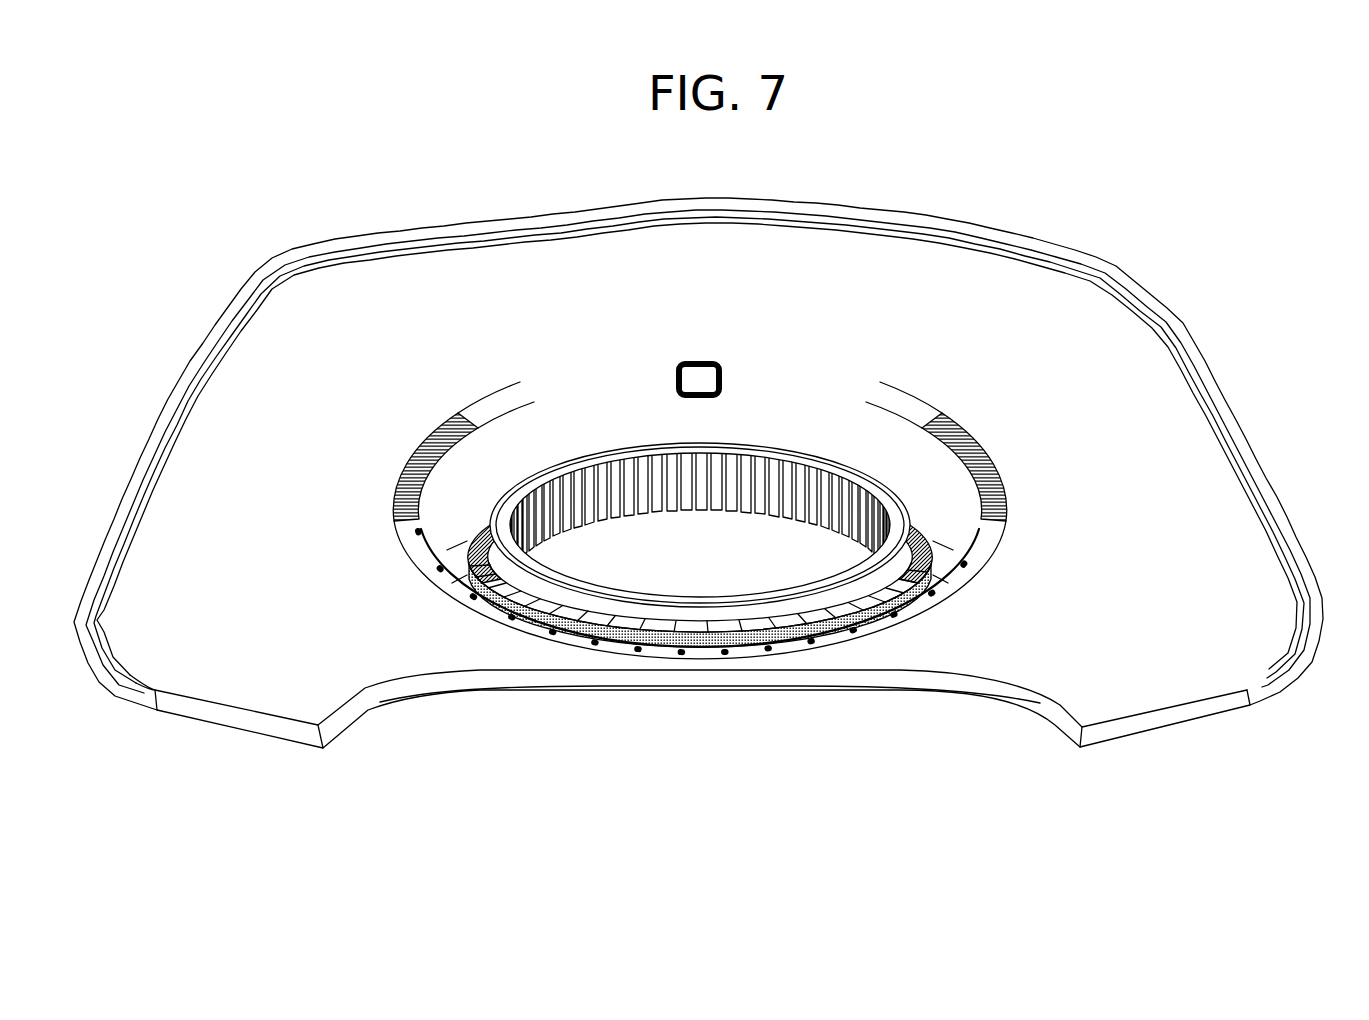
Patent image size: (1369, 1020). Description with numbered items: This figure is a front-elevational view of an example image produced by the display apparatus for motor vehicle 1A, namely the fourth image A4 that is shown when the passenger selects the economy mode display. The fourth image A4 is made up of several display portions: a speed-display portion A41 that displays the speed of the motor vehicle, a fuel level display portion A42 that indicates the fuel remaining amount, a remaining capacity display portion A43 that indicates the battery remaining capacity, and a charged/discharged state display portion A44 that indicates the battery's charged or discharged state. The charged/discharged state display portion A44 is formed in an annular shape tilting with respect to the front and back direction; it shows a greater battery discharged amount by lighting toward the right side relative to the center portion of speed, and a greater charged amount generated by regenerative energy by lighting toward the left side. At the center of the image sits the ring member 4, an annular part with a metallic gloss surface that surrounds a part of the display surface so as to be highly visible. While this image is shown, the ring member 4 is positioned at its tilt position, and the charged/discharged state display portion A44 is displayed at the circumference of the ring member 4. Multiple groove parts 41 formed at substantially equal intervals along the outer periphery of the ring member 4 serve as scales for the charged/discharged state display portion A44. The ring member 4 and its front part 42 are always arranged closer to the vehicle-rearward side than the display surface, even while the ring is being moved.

The display apparatus for motor vehicle 1A is at (1118, 228).
The fourth image A4 is at (980, 302).
The speed-display portion A41 is at (710, 348).
The fuel level display portion A42 is at (1013, 423).
The remaining capacity display portion A43 is at (387, 425).
The charged/discharged state display portion A44 is at (807, 657).
The ring member 4 is at (700, 593).
The groove parts 41 is at (628, 624).
The front part 42 is at (570, 593).